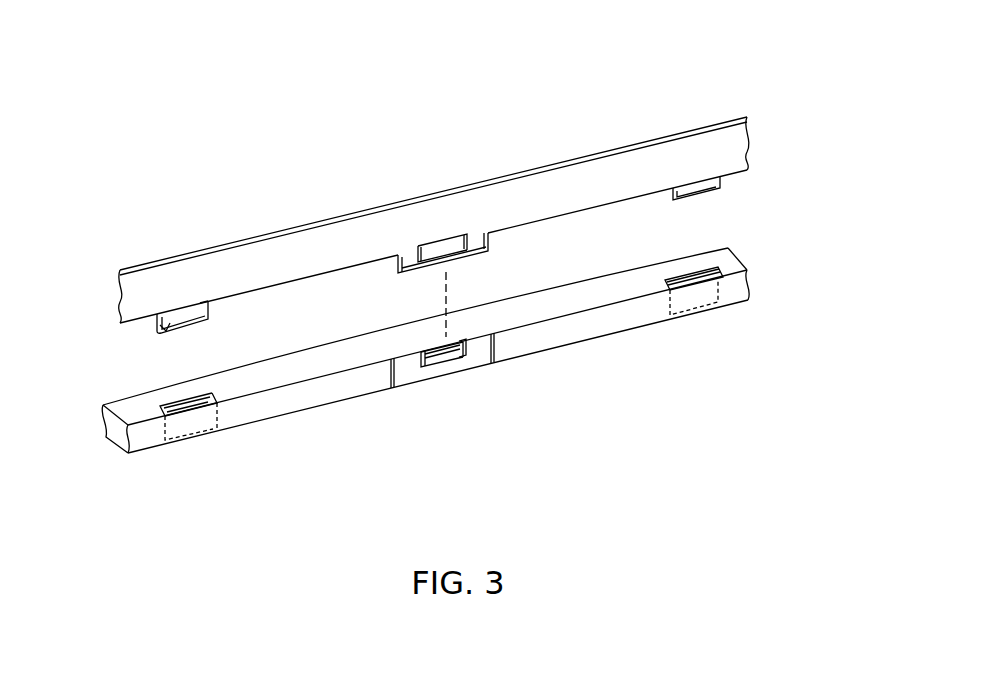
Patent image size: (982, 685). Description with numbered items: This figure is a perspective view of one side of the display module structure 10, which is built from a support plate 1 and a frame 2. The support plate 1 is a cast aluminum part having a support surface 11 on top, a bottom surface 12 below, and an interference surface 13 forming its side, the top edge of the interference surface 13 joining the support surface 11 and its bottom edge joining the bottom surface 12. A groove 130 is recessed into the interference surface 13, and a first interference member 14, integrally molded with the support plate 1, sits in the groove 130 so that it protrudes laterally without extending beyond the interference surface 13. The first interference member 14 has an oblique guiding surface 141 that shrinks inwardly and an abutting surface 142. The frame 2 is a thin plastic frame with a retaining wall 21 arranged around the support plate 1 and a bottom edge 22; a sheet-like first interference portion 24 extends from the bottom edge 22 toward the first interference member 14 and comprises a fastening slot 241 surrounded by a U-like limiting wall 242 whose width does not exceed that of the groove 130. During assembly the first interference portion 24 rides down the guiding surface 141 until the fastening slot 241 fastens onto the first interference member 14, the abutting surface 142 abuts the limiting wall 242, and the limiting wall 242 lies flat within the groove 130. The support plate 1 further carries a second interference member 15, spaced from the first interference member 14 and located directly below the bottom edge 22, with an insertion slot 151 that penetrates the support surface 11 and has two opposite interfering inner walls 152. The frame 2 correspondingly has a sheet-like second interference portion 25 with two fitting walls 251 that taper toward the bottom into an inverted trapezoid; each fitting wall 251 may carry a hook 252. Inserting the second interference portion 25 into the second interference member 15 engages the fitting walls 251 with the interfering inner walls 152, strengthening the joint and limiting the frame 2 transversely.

The display module structure 10 is at (786, 50).
The support plate 1 is at (721, 260).
The frame 2 is at (720, 117).
The support surface 11 is at (558, 305).
The bottom surface 12 is at (637, 327).
The interference surface 13 is at (323, 390).
The groove 130 is at (407, 368).
The first interference member 14 is at (507, 431).
The guiding surface 141 is at (440, 353).
The abutting surface 142 is at (460, 354).
The second interference member 15 is at (162, 489).
The insertion slot 151 is at (172, 404).
The interfering inner walls 152 is at (210, 413).
The retaining wall 21 is at (507, 207).
The bottom edge 22 is at (573, 207).
The first interference portion 24 is at (345, 121).
The fastening slot 241 is at (445, 243).
The limiting wall 242 is at (407, 257).
The second interference portion 25 is at (195, 302).
The fitting walls 251 is at (215, 306).
The hook 252 is at (158, 330).